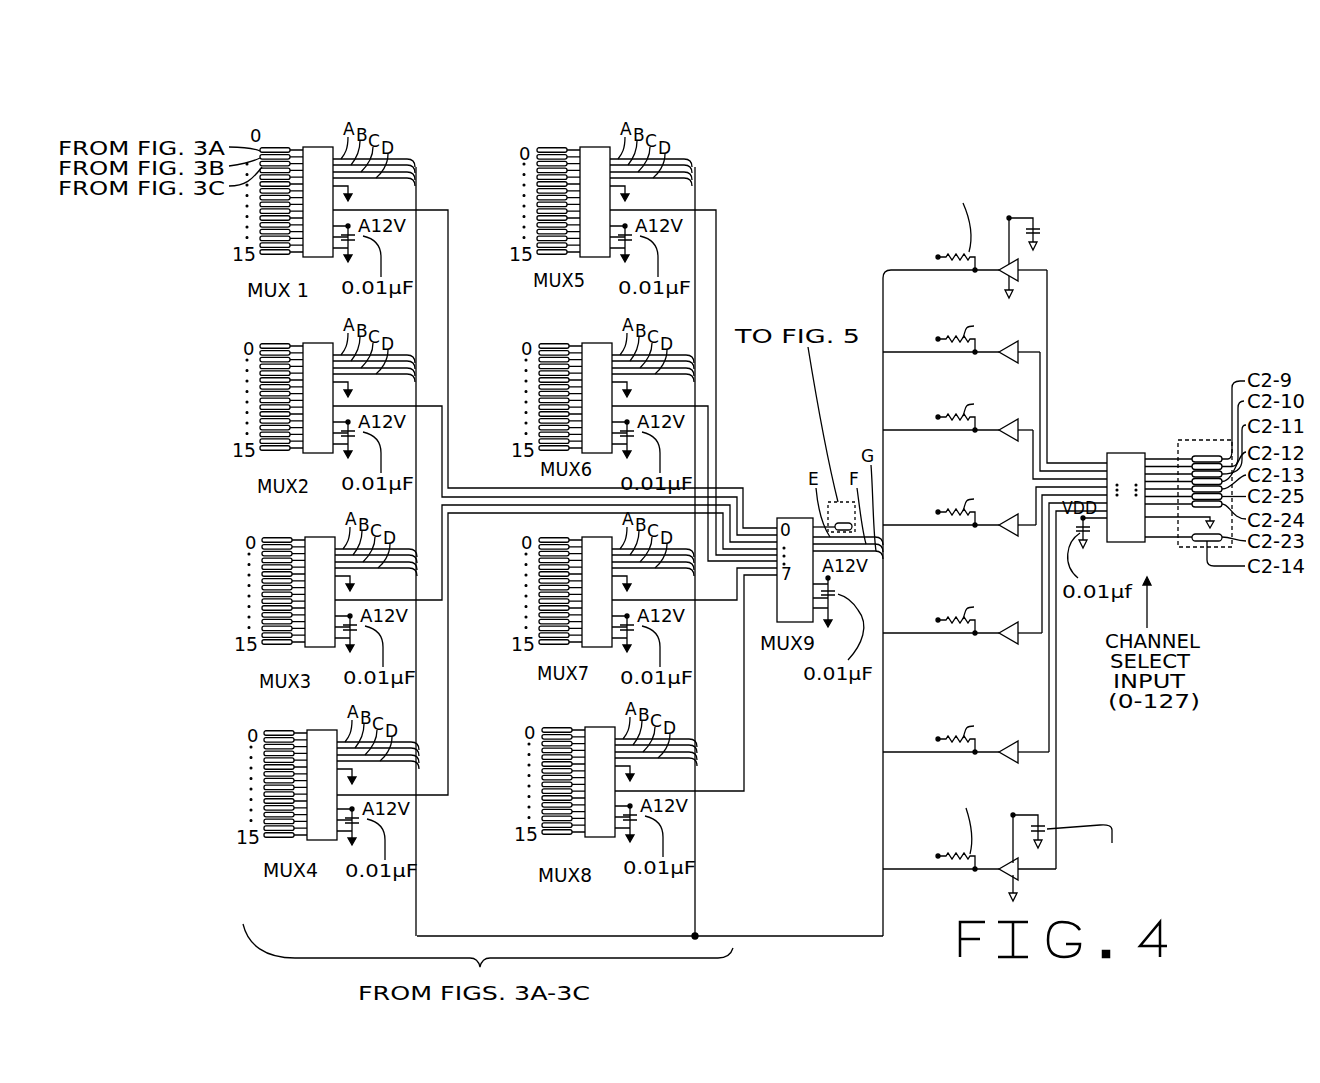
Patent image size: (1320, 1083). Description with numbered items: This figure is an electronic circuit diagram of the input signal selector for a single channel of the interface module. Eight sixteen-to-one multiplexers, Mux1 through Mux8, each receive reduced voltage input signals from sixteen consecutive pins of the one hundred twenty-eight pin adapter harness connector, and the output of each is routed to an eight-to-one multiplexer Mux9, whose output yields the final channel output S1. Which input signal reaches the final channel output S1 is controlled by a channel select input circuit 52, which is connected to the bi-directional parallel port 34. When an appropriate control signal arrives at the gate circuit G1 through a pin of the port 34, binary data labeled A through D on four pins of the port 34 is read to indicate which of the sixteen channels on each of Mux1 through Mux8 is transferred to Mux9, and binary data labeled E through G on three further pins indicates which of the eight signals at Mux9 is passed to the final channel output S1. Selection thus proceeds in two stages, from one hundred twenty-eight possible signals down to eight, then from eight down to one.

The channel select input circuit 52 is at (1202, 188).
The bi-directional parallel port 34 is at (1188, 481).
The gate circuit G1 is at (1136, 498).
The final channel output S1 is at (834, 517).